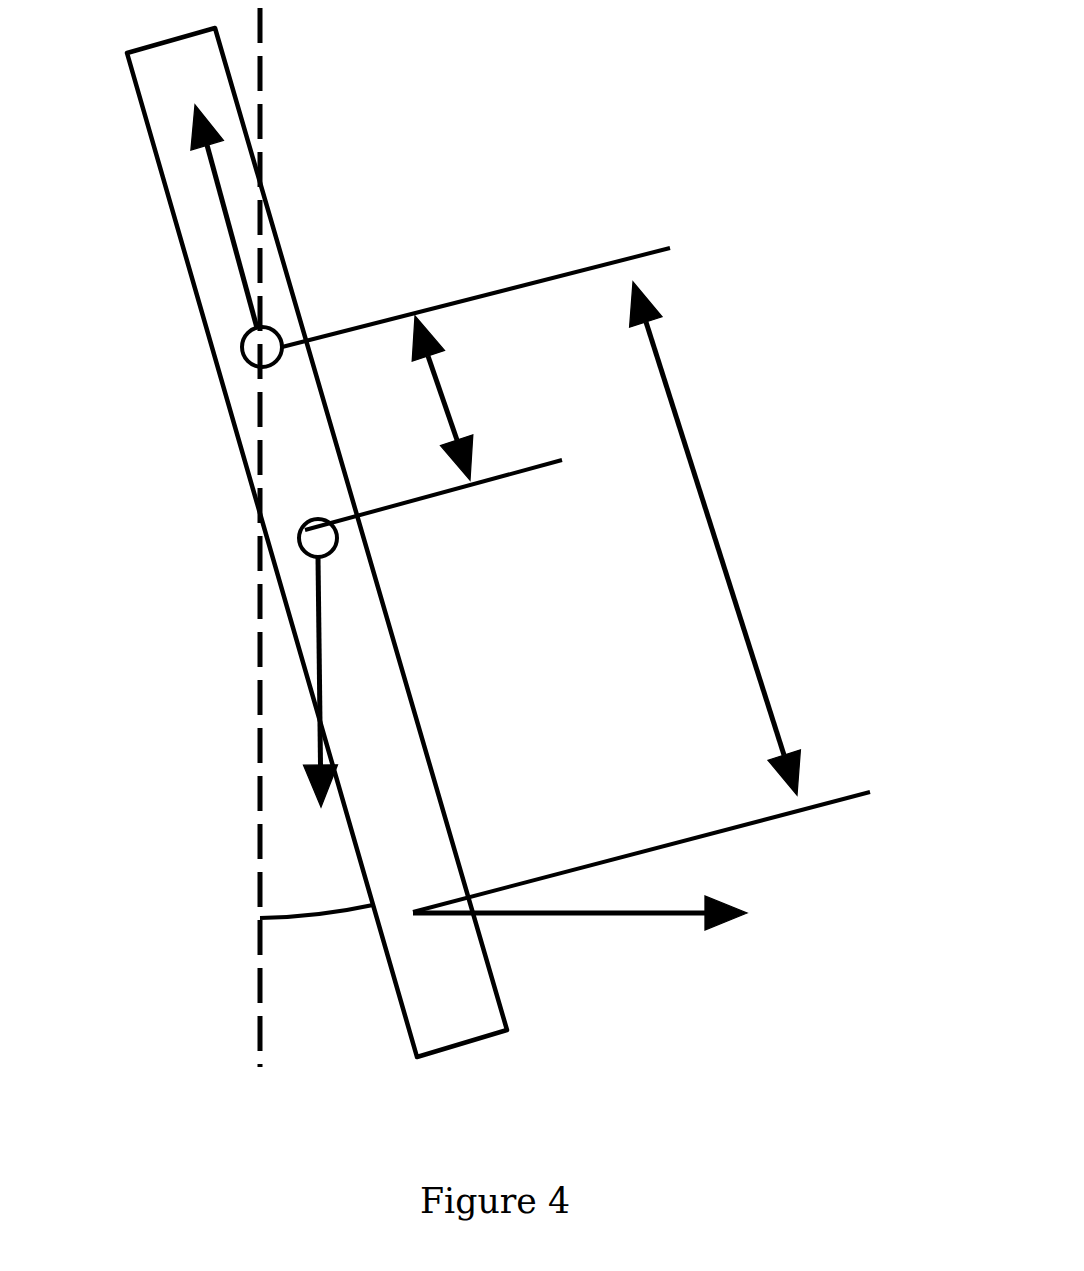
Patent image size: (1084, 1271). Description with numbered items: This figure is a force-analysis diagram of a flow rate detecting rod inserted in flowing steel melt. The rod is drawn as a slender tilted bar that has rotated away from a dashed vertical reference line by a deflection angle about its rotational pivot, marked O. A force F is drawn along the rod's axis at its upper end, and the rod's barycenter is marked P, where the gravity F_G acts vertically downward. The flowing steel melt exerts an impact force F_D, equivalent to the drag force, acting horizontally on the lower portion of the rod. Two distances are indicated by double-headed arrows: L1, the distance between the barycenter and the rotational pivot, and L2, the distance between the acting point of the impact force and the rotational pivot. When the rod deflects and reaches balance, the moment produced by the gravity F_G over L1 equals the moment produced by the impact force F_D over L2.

The applied force F is at (177, 216).
The pivot point O is at (197, 388).
The center of gravity point P is at (274, 566).
The distance between the barycenter and the rotational pivot L1 is at (509, 398).
The distance between the acting point of the impact force and the rotational pivot L2 is at (748, 538).
The gravity FG is at (385, 686).
The impact force of the flowing steel melt FD is at (605, 1006).